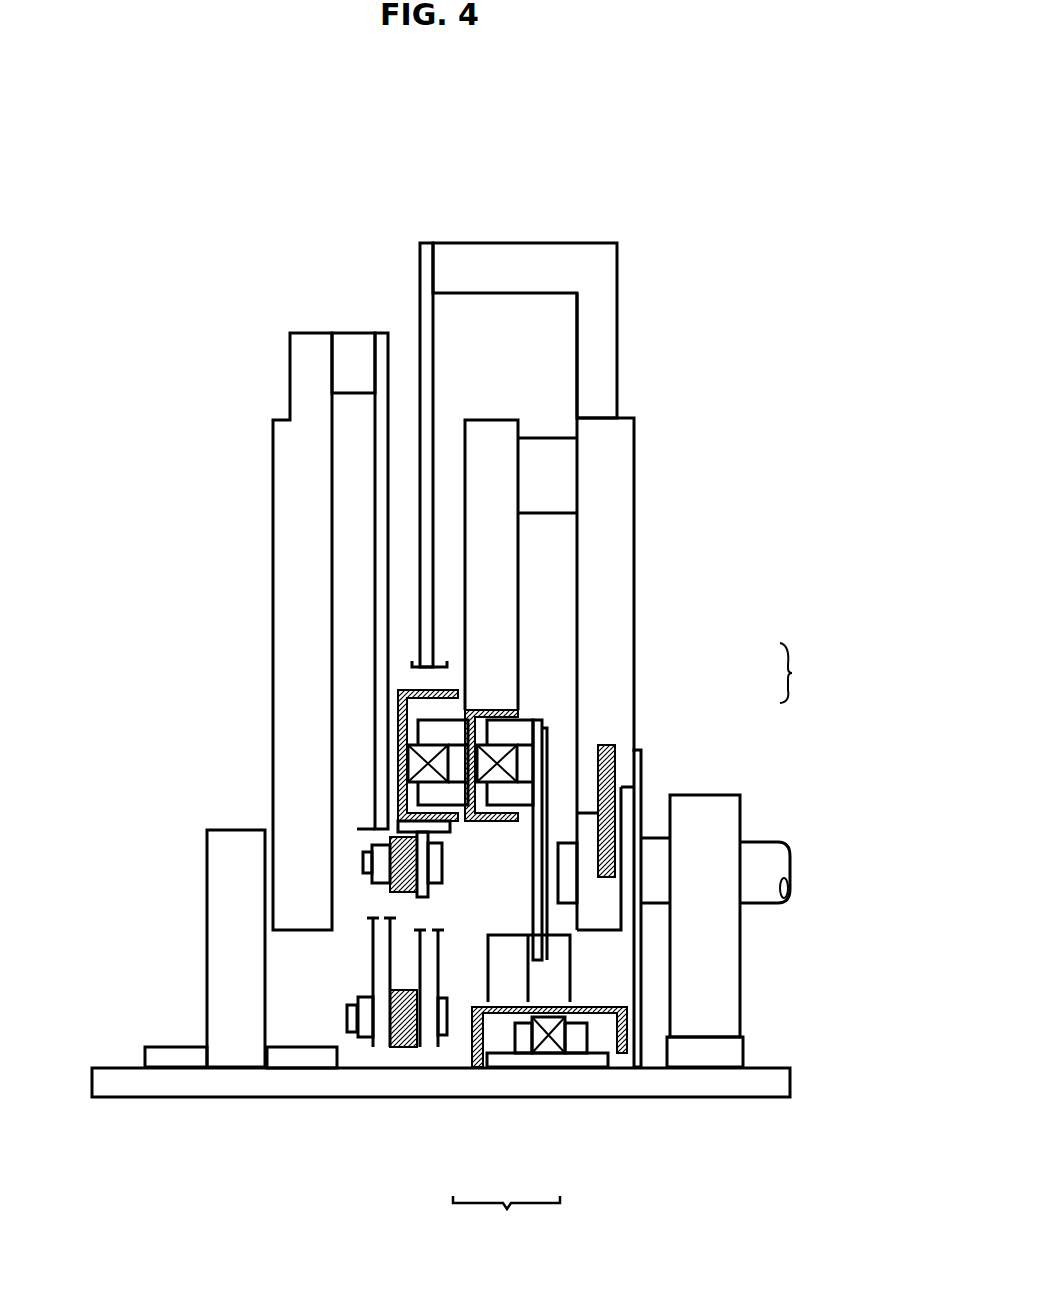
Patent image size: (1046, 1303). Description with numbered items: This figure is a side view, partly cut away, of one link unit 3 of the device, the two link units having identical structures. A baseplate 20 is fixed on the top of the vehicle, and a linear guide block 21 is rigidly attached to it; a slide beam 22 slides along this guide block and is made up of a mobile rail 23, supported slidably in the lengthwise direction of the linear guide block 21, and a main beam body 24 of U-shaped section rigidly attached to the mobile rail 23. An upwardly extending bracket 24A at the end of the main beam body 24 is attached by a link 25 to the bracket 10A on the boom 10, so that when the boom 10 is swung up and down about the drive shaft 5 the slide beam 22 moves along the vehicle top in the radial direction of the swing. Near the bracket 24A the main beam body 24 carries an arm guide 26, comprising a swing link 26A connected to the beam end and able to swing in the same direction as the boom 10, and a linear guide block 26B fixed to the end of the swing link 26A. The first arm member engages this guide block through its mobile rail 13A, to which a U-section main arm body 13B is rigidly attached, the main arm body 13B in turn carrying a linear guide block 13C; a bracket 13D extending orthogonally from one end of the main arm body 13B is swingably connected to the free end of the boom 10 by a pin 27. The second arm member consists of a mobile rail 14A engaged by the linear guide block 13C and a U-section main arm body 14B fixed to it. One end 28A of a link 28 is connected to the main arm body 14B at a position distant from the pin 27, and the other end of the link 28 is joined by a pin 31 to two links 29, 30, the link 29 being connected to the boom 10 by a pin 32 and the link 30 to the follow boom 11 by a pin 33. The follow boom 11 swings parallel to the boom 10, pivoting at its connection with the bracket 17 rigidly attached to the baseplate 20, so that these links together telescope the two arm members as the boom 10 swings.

The link unit 3 is at (688, 220).
The drive shaft 5 is at (773, 867).
The boom 10 is at (636, 573).
The bracket 10A is at (636, 770).
The follow boom 11 is at (273, 595).
The mobile rail 13A is at (500, 822).
The main arm body 13B is at (497, 707).
The linear guide block 13C is at (407, 732).
The bracket 13D is at (523, 557).
The mobile rail 14A is at (408, 763).
The main arm body 14B is at (418, 742).
The bracket 17 is at (207, 955).
The baseplate 20 is at (295, 1085).
The linear guide block 21 is at (592, 1058).
The slide beam 22 is at (506, 1229).
The mobile rail 23 is at (547, 1053).
The main beam body 24 is at (475, 1067).
The bracket 24A is at (641, 978).
The link 25 is at (617, 835).
The arm guide 26 is at (812, 673).
The swing link 26A is at (548, 745).
The linear guide block 26B is at (522, 733).
The pin 27 is at (567, 472).
The link 28 is at (403, 1047).
The one end of link 28A is at (362, 854).
The link 29 is at (427, 242).
The link 30 is at (383, 330).
The pin 31 is at (368, 1062).
The pin 32 is at (507, 242).
The pin 33 is at (348, 333).